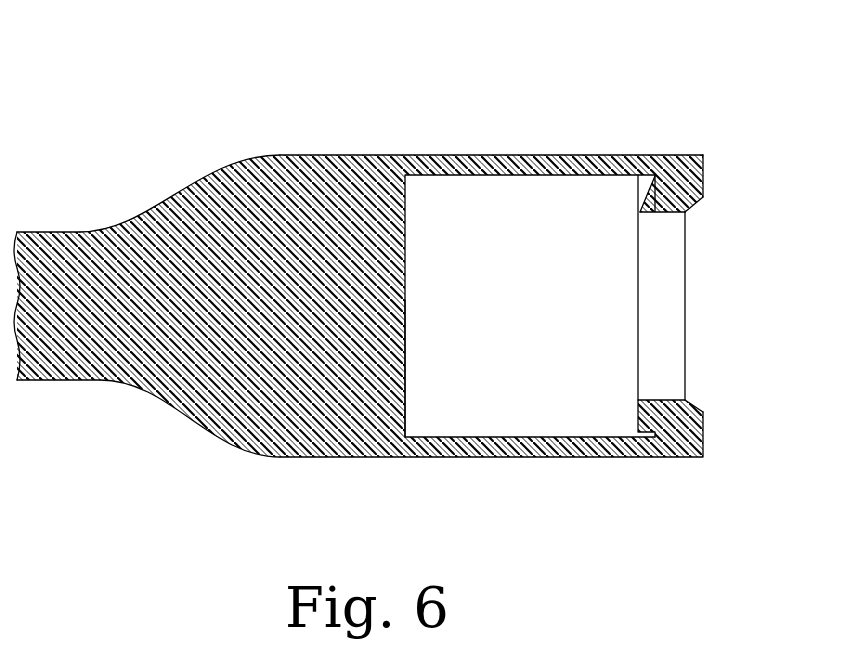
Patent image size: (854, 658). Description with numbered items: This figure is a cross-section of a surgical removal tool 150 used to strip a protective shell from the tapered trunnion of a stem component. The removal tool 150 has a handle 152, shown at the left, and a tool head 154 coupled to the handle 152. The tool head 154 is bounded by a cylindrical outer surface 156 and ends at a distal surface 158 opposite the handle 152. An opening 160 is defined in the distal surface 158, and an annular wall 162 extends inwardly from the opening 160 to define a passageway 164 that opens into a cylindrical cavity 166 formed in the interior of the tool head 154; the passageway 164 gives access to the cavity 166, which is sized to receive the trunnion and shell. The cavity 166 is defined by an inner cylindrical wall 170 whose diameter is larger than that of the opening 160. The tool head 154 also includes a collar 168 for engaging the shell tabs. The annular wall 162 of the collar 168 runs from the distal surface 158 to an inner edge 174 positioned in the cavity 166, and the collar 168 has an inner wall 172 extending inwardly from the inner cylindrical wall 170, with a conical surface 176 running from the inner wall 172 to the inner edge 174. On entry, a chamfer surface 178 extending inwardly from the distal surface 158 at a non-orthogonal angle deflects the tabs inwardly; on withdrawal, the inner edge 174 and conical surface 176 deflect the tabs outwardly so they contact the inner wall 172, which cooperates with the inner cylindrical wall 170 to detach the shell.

The surgical removal tool 150 is at (620, 81).
The handle 152 is at (83, 232).
The tool head 154 is at (310, 168).
The cylindrical outer surface 156 is at (390, 155).
The distal surface 158 is at (703, 440).
The opening 160 is at (703, 404).
The annular wall 162 is at (686, 215).
The passageway 164 is at (648, 313).
The cylindrical cavity 166 is at (479, 417).
The collar 168 is at (686, 155).
The inner cylindrical wall 170 is at (490, 176).
The inner wall 172 is at (641, 190).
The inner edge 174 is at (641, 213).
The conical surface 176 is at (641, 418).
The chamfer surface 178 is at (703, 207).